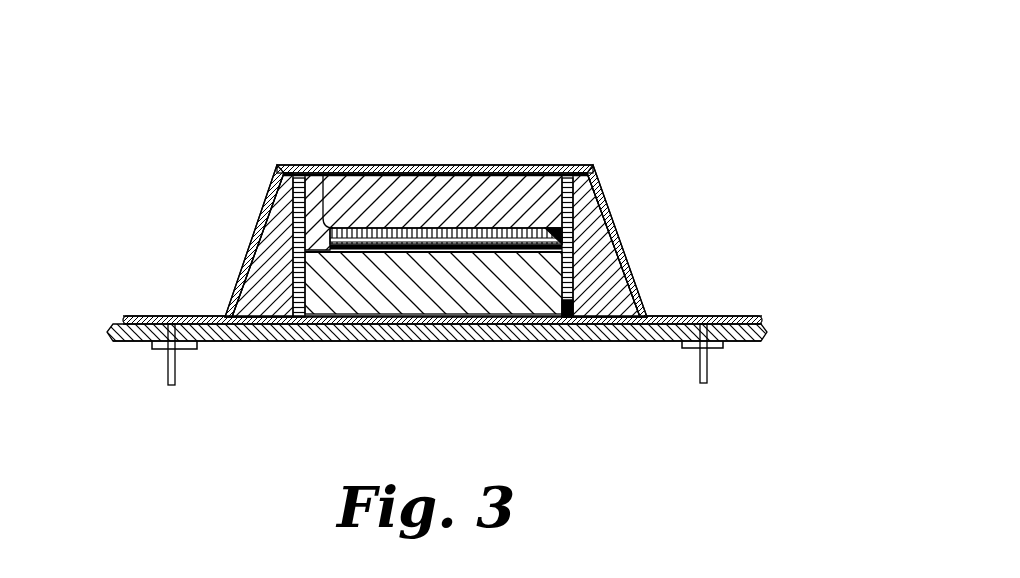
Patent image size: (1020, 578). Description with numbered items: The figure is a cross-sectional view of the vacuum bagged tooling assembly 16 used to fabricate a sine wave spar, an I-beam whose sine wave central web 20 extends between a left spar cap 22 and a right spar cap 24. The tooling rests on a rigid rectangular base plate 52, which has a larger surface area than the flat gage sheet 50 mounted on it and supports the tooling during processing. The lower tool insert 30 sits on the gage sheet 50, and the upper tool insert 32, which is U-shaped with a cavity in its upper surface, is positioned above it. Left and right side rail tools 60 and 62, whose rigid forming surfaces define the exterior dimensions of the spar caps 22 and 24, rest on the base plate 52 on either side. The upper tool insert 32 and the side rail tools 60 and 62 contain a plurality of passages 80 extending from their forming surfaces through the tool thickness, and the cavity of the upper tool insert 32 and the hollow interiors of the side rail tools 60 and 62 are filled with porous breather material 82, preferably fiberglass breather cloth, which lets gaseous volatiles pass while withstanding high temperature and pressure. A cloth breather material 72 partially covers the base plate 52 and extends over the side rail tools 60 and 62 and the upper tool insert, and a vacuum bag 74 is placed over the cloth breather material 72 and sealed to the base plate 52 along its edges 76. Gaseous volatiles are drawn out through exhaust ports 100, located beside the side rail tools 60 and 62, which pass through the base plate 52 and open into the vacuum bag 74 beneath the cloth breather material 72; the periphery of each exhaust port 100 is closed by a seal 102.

The vacuum bagged tooling assembly 16 is at (697, 86).
The sine wave central web 20 is at (473, 248).
The left spar cap 22 is at (560, 310).
The right spar cap 24 is at (287, 342).
The lower tool insert 30 is at (348, 303).
The upper tool insert 32 is at (320, 172).
The gage sheet 50 is at (400, 325).
The base plate 52 is at (766, 328).
The left side rail tool 60 is at (230, 318).
The right side rail tool 62 is at (632, 322).
The cloth breather material 72 is at (503, 168).
The vacuum bag 74 is at (680, 315).
The edges 76 is at (123, 317).
The passages 80 is at (528, 232).
The porous breather material 82 is at (425, 185).
The exhaust ports 100 is at (168, 384).
The seal 102 is at (197, 349).